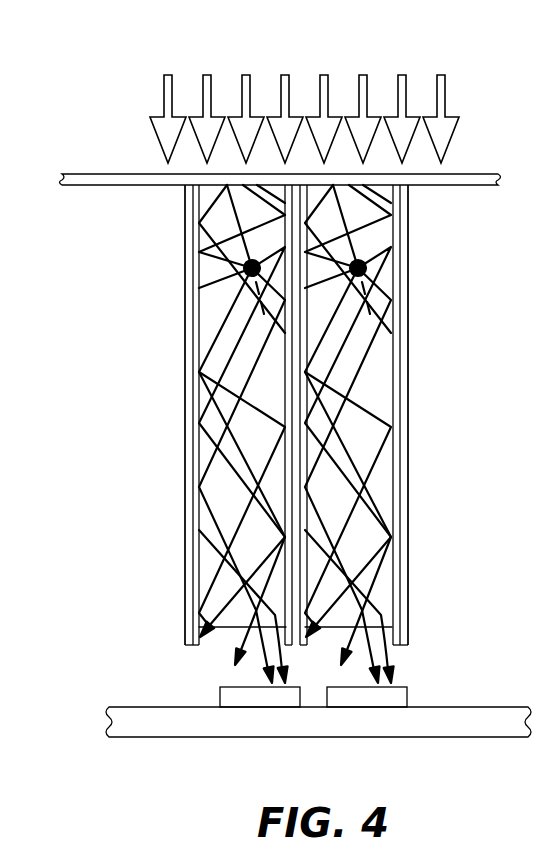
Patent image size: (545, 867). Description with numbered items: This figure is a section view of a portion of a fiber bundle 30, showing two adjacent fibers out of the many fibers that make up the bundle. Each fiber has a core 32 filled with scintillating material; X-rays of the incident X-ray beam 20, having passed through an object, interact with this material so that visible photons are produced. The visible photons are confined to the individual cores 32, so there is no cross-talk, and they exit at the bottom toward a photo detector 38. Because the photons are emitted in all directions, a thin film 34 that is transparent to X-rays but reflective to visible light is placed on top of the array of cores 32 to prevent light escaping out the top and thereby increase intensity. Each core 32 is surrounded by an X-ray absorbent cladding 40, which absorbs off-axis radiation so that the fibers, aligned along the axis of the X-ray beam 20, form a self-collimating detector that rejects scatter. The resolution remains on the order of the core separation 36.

The X-ray beam 20 is at (455, 71).
The bundle 30 is at (160, 373).
The cores 32 is at (237, 476).
The thin film 34 is at (452, 186).
The core separation 36 is at (220, 740).
The photo detector 38 is at (471, 706).
The X-ray absorbent cladding 40 is at (178, 532).